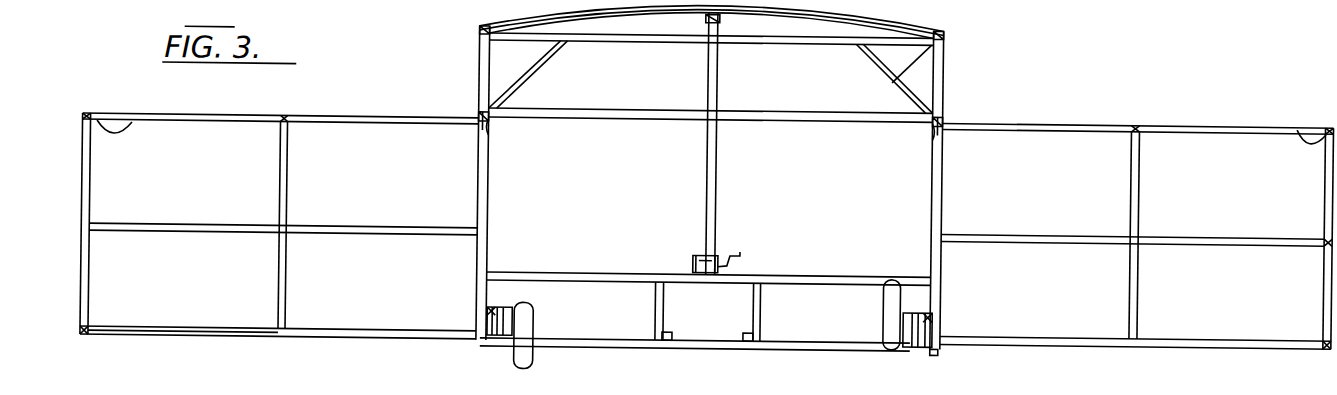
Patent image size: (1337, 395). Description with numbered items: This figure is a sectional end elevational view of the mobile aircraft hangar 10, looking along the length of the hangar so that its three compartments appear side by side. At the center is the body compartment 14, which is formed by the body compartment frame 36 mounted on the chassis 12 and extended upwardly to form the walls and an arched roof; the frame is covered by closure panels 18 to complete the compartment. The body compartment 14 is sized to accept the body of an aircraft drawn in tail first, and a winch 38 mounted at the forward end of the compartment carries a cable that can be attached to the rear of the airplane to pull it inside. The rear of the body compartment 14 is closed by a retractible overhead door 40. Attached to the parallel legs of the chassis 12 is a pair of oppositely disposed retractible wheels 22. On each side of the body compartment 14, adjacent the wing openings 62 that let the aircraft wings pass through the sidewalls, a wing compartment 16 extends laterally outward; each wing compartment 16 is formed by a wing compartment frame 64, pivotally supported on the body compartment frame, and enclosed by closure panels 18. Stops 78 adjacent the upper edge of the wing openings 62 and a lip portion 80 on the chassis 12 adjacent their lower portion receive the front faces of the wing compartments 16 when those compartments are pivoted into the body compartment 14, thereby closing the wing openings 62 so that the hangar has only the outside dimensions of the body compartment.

The mobile aircraft hangar 10 is at (766, 52).
The chassis 12 is at (745, 335).
The body compartment 14 is at (710, 180).
The wing compartments 16 is at (707, 231).
The closure panels 18 is at (67, 224).
The retractible wheels 22 is at (708, 301).
The body compartment frame 36 is at (711, 76).
The winch 38 is at (700, 249).
The retractible overhead door 40 is at (180, 362).
The wing openings 62 is at (710, 150).
The wing compartment frame 64 is at (712, 107).
The stops 78 is at (709, 135).
The lip portion 80 is at (708, 310).